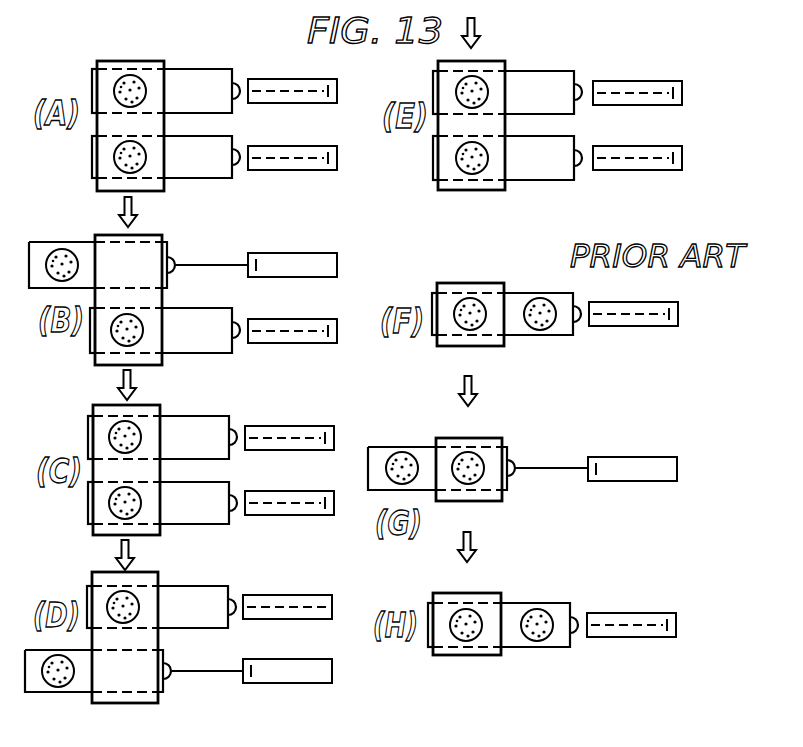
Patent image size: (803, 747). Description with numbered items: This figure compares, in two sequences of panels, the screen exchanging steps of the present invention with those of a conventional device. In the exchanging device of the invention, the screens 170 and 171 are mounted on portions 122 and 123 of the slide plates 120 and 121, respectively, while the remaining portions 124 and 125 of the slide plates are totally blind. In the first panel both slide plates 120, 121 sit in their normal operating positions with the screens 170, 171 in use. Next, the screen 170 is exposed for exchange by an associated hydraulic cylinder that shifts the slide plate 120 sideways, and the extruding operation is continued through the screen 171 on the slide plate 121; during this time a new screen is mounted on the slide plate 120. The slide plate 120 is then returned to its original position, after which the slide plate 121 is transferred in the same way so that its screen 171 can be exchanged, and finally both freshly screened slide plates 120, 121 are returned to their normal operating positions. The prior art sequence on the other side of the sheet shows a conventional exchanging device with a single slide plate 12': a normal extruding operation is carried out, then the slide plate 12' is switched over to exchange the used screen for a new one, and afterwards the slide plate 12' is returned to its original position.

The slide plate 120 is at (201, 67).
The slide plate 121 is at (190, 180).
The portion of slide plate 122 is at (103, 78).
The portion of slide plate 123 is at (103, 164).
The portion of slide plate 124 is at (224, 80).
The portion of slide plate 125 is at (218, 170).
The screen 170 is at (113, 93).
The screen 171 is at (115, 155).
The slide plate 12' is at (551, 335).